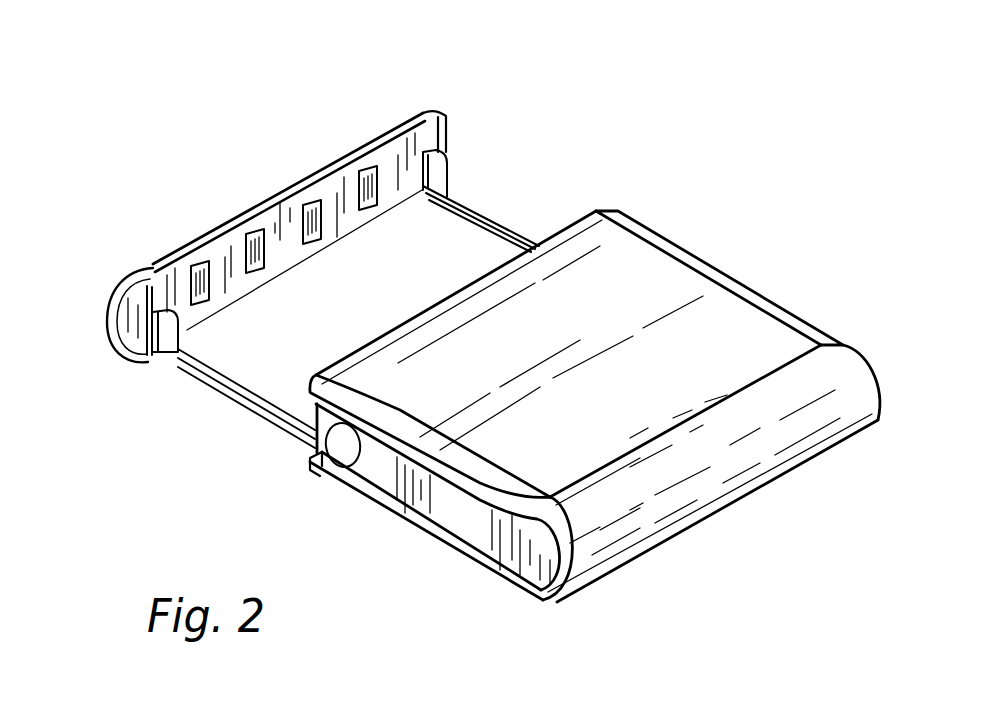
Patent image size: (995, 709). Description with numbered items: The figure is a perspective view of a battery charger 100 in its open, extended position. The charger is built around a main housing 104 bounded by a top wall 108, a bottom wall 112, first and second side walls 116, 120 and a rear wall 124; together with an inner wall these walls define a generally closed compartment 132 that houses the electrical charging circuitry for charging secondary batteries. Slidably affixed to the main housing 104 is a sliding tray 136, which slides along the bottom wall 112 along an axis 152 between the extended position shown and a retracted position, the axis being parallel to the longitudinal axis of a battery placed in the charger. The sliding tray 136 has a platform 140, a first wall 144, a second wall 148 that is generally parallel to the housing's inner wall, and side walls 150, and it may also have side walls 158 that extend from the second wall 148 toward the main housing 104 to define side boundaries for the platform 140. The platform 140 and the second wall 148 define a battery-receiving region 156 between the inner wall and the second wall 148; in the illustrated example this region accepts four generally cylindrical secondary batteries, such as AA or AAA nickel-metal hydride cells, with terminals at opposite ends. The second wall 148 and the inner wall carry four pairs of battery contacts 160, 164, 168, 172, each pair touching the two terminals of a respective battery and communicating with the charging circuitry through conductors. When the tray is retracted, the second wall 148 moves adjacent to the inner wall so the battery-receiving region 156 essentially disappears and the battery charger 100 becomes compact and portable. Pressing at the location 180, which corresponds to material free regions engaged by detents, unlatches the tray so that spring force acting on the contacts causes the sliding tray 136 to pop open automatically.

The battery charger 100 is at (750, 162).
The main housing 104 is at (727, 272).
The top wall 108 is at (648, 389).
The bottom wall 112 is at (494, 576).
The first side wall 116 is at (466, 512).
The second side wall 120 is at (798, 317).
The rear wall 124 is at (745, 437).
The closed compartment 132 is at (601, 293).
The sliding tray 136 is at (242, 405).
The platform 140 is at (406, 254).
The first wall 144 is at (166, 262).
The second wall 148 is at (230, 276).
The side walls 150 is at (441, 143).
The axis 152 is at (304, 287).
The battery-receiving region 156 is at (443, 248).
The side walls 158 is at (448, 181).
The battery contacts 160 is at (365, 172).
The battery contacts 164 is at (308, 206).
The battery contacts 168 is at (252, 242).
The battery contacts 172 is at (197, 268).
The pressure location 180 is at (340, 448).